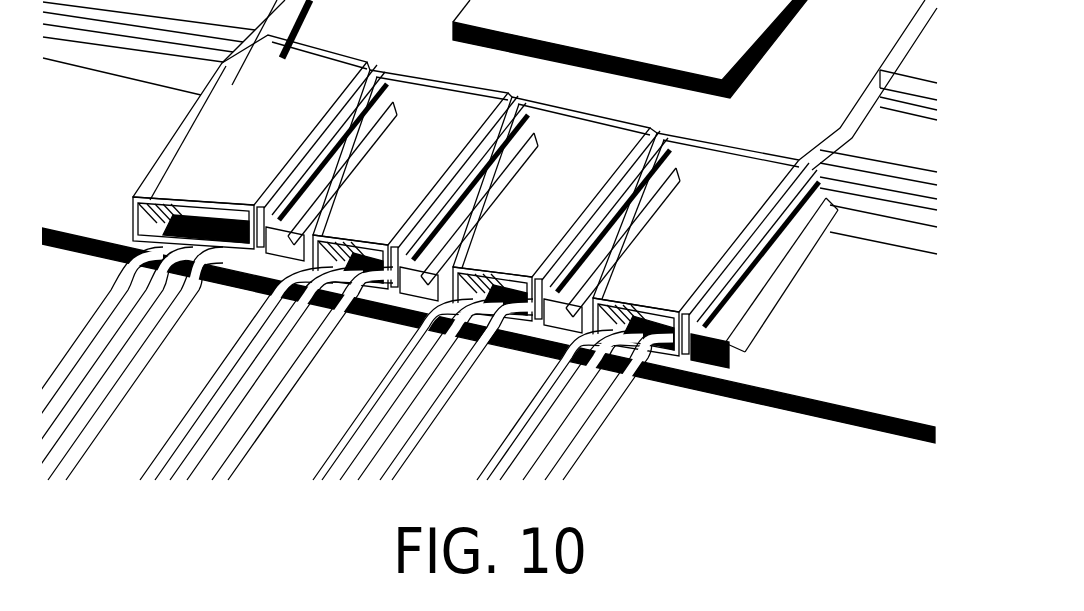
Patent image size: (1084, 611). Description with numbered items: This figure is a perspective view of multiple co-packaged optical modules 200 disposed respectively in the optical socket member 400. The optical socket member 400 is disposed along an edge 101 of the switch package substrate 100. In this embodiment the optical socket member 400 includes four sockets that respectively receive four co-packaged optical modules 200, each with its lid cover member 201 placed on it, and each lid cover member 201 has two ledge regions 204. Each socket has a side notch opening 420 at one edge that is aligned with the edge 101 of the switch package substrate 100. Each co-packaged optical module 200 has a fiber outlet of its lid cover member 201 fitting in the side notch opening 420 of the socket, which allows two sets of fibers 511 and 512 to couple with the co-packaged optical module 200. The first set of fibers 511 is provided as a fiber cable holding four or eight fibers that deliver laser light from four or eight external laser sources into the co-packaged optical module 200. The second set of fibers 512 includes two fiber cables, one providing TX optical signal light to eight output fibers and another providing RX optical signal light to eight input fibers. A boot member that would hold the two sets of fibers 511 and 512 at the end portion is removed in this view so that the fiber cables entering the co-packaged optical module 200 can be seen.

The switch package substrate 100 is at (900, 380).
The edge of the switch package substrate 101 is at (740, 400).
The co-packaged optical module 200 is at (735, 277).
The lid cover member 201 is at (735, 232).
The ledge region 204 is at (790, 203).
The optical socket member 400 is at (745, 323).
The side notch opening 420 is at (660, 347).
The first set of fibers 511 is at (528, 421).
The second set of fibers 512 is at (580, 433).